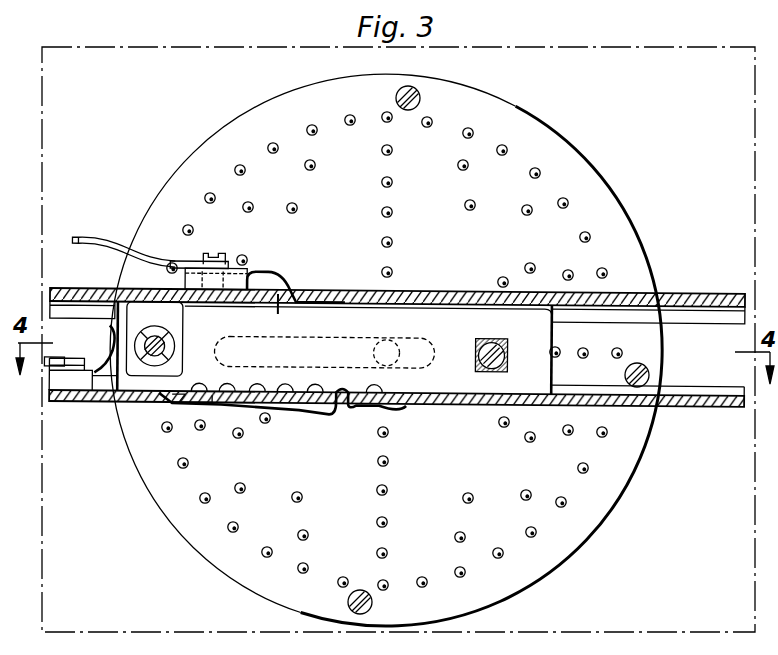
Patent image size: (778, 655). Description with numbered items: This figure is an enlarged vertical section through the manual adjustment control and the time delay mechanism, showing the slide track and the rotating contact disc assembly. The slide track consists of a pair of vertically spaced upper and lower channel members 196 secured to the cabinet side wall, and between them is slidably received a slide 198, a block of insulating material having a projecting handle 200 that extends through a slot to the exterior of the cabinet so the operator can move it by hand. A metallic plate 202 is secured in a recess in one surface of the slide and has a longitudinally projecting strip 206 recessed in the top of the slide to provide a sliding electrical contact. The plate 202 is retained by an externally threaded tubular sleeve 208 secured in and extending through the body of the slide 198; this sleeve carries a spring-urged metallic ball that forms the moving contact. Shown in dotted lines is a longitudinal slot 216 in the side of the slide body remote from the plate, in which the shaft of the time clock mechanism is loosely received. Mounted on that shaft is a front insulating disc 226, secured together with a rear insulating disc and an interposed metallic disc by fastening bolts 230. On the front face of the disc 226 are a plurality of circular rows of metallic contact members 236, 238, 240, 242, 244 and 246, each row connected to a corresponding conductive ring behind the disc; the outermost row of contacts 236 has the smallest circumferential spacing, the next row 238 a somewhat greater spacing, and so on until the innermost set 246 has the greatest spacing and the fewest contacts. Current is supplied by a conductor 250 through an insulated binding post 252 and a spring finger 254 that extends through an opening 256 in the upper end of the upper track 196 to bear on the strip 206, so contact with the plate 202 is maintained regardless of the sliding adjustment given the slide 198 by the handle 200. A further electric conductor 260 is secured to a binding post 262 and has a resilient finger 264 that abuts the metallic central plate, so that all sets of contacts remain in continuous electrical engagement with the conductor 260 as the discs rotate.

The channel members 196 is at (687, 389).
The slide 198 is at (460, 313).
The projecting handle 200 is at (508, 365).
The metallic plate 202 is at (183, 326).
The longitudinally projecting strip 206 is at (357, 304).
The externally threaded tubular sleeve 208 is at (160, 362).
The longitudinal slot 216 is at (428, 364).
The front insulating disc 226 is at (542, 558).
The fastening bolts 230 is at (418, 94).
The metallic contact members 236 is at (388, 588).
The metallic contact members 238 is at (377, 552).
The metallic contact members 240 is at (388, 520).
The metallic contact members 242 is at (376, 490).
The metallic contact members 244 is at (389, 460).
The metallic contact members 246 is at (377, 432).
The conductor 250 is at (92, 236).
The insulated binding post 252 is at (237, 281).
The spring finger 254 is at (279, 300).
The opening 256 is at (327, 300).
The electric conductor 260 is at (37, 366).
The binding post 262 is at (83, 380).
The resilient finger 264 is at (108, 354).